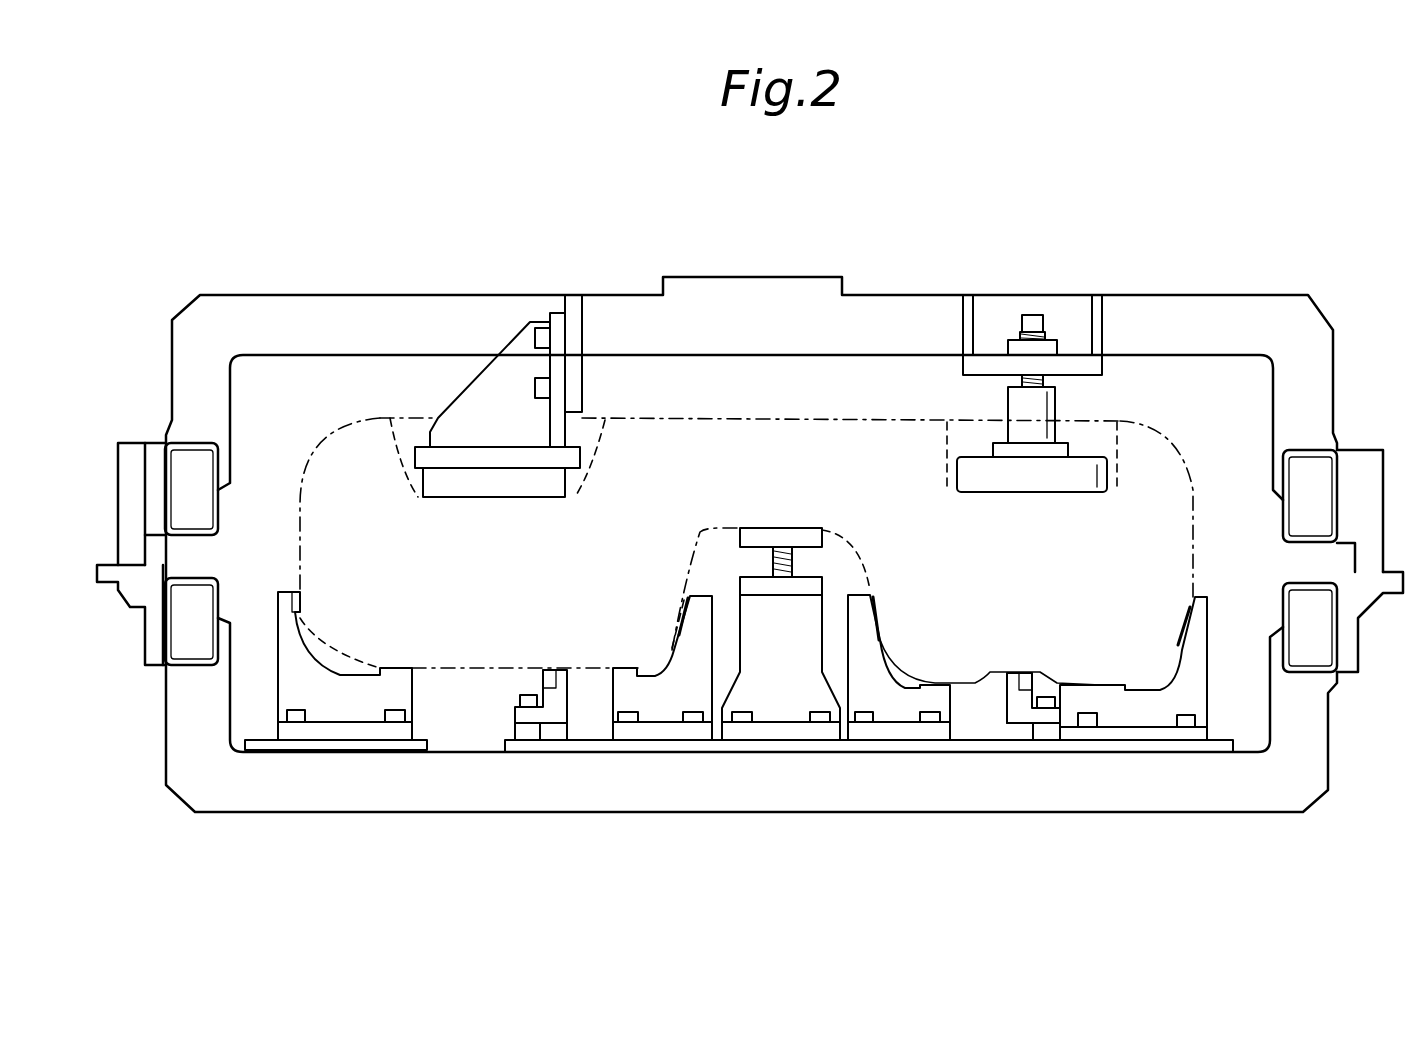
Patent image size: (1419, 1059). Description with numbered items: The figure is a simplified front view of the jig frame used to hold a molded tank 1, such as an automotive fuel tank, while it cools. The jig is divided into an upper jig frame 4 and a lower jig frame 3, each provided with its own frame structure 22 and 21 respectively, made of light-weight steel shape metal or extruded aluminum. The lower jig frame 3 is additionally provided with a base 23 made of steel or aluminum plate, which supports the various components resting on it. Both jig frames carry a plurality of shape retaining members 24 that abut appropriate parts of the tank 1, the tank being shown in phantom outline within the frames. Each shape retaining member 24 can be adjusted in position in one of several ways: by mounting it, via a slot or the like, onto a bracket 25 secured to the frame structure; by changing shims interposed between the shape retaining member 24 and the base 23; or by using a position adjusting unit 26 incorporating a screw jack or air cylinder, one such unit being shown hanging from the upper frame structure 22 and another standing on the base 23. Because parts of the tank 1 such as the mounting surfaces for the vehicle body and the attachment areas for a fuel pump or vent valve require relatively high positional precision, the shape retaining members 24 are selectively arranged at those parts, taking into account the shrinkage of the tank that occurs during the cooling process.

The tank 1 is at (1160, 440).
The lower jig frame 3 is at (750, 711).
The upper jig frame 4 is at (765, 454).
The frame structure 21 is at (1315, 749).
The frame structure 22 is at (1325, 382).
The base 23 is at (1223, 745).
The shape retaining members 24 is at (670, 690).
The bracket 25 is at (577, 322).
The position adjusting unit 26 is at (1045, 385).